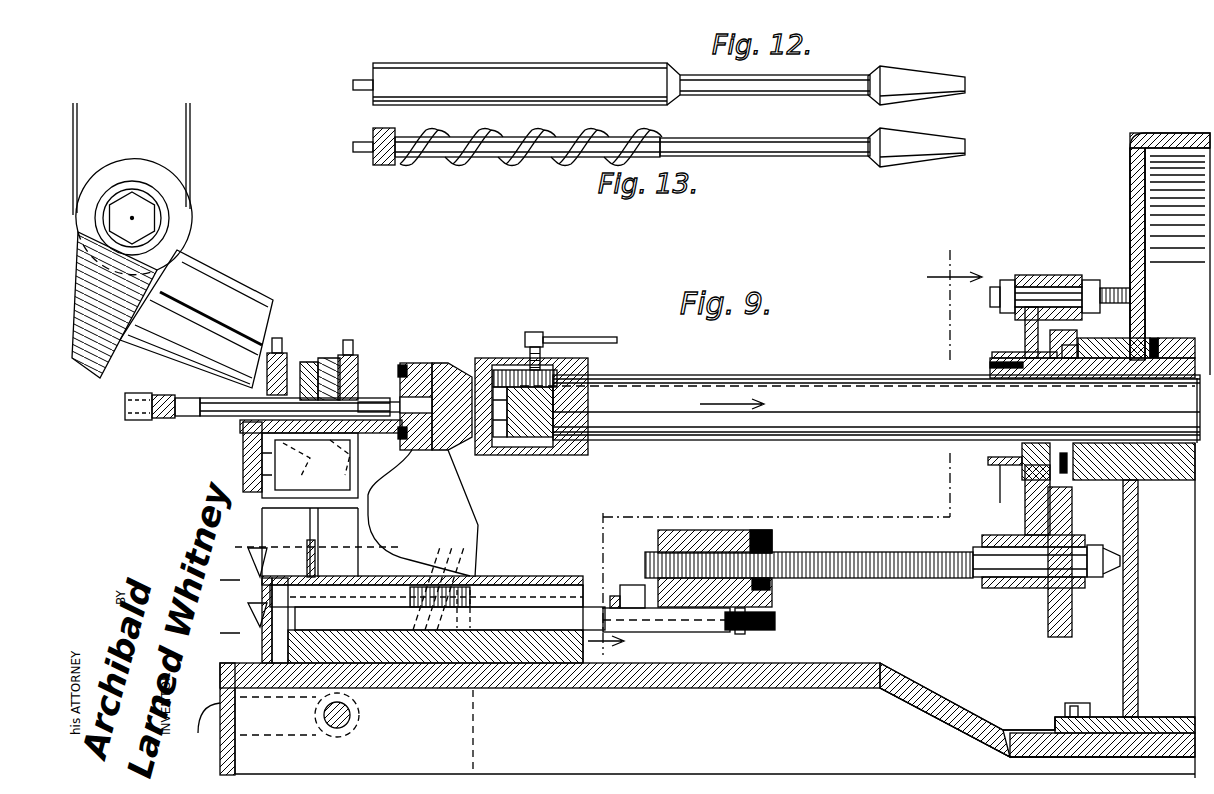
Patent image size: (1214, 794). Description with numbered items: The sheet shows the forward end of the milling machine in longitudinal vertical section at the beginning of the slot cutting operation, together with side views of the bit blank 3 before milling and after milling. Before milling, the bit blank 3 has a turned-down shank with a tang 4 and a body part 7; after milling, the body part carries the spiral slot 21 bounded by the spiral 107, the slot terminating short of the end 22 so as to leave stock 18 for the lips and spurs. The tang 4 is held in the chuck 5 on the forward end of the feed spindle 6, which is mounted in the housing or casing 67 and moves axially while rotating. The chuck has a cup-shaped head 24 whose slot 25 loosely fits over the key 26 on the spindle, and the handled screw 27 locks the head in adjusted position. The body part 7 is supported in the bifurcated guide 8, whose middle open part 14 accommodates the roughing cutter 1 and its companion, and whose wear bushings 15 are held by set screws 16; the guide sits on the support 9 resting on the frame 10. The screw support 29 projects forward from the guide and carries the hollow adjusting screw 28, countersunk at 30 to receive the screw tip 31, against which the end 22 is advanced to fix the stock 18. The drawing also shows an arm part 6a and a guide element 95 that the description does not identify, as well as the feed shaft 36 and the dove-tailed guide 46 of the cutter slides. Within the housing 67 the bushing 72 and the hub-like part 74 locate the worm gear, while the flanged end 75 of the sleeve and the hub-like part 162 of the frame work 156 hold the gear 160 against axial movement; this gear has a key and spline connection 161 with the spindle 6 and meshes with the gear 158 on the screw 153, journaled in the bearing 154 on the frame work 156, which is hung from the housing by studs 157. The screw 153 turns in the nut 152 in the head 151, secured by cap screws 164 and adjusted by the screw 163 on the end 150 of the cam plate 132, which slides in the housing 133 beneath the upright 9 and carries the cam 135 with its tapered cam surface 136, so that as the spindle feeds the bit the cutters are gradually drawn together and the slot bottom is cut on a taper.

In FIG. 12, the bit blank 3 is at (645, 80).
In FIG. 9, the bit blank 3 is at (363, 403).
In FIG. 13, the end of the bit blank 22 is at (375, 130).
In FIG. 13, the stock 18 is at (378, 150).
In FIG. 13, the spiral slot 21 is at (520, 160).
In FIG. 13, the spiral 107 is at (470, 160).
In FIG. 9, the pivot eye of arm 6a is at (191, 229).
In FIG. 9, the body part of the bit blank 7 is at (226, 394).
In FIG. 9, the hollow adjusting screw 28 is at (131, 421).
In FIG. 9, the countersink 30 is at (164, 397).
In FIG. 9, the screw tip 31 is at (182, 416).
In FIG. 9, the screw support 29 is at (245, 420).
In FIG. 9, the set screws 16 is at (280, 345).
In FIG. 9, the middle open part of the guide 14 is at (316, 364).
In FIG. 9, the roughing cutter 1 is at (323, 368).
In FIG. 9, the wear bushings 15 is at (300, 432).
In FIG. 9, the bifurcated guide or bushing 8 is at (317, 499).
In FIG. 9, the tang 4 is at (420, 362).
In FIG. 9, the chuck 5 is at (455, 362).
In FIG. 9, the cup-shaped head 24 is at (548, 456).
In FIG. 9, the slot 25 is at (596, 368).
In FIG. 9, the key 26 is at (596, 378).
In FIG. 9, the handled screw 27 is at (540, 331).
In FIG. 9, the feed spindle 6 is at (819, 378).
In FIG. 9, the housing or casing 67 is at (1130, 206).
In FIG. 9, the bushing 72 is at (1194, 355).
In FIG. 9, the hub-like part of the housing 74 is at (1146, 346).
In FIG. 9, the hub-like part of the frame work 162 is at (990, 363).
In FIG. 9, the flanged end of the sleeve 75 is at (1050, 354).
In FIG. 9, the gear 160 is at (1070, 339).
In FIG. 9, the studs 157 is at (1113, 290).
In FIG. 9, the frame 10 is at (785, 488).
In FIG. 9, the key and spline connection 161 is at (1063, 387).
In FIG. 9, the frame work 156 is at (1000, 503).
In FIG. 9, the gear 158 is at (1067, 514).
In FIG. 9, the bearing 154 is at (1032, 580).
In FIG. 9, the screw 153 is at (880, 566).
In FIG. 9, the head 151 is at (728, 498).
In FIG. 9, the nut 152 is at (761, 530).
In FIG. 9, the end of the cam plate 150 is at (690, 626).
In FIG. 9, the screw 163 is at (776, 622).
In FIG. 9, the cap screws 164 is at (630, 585).
In FIG. 9, the support or upright 9 is at (536, 580).
In FIG. 9, the cam 135 is at (394, 596).
In FIG. 9, the cam surface 136 is at (462, 600).
In FIG. 9, the cam plate 132 is at (560, 614).
In FIG. 9, the housing 133 is at (546, 656).
In FIG. 9, the guide 95 is at (241, 619).
In FIG. 9, the dove-tailed guide 46 is at (238, 652).
In FIG. 9, the feed shaft 36 is at (352, 716).